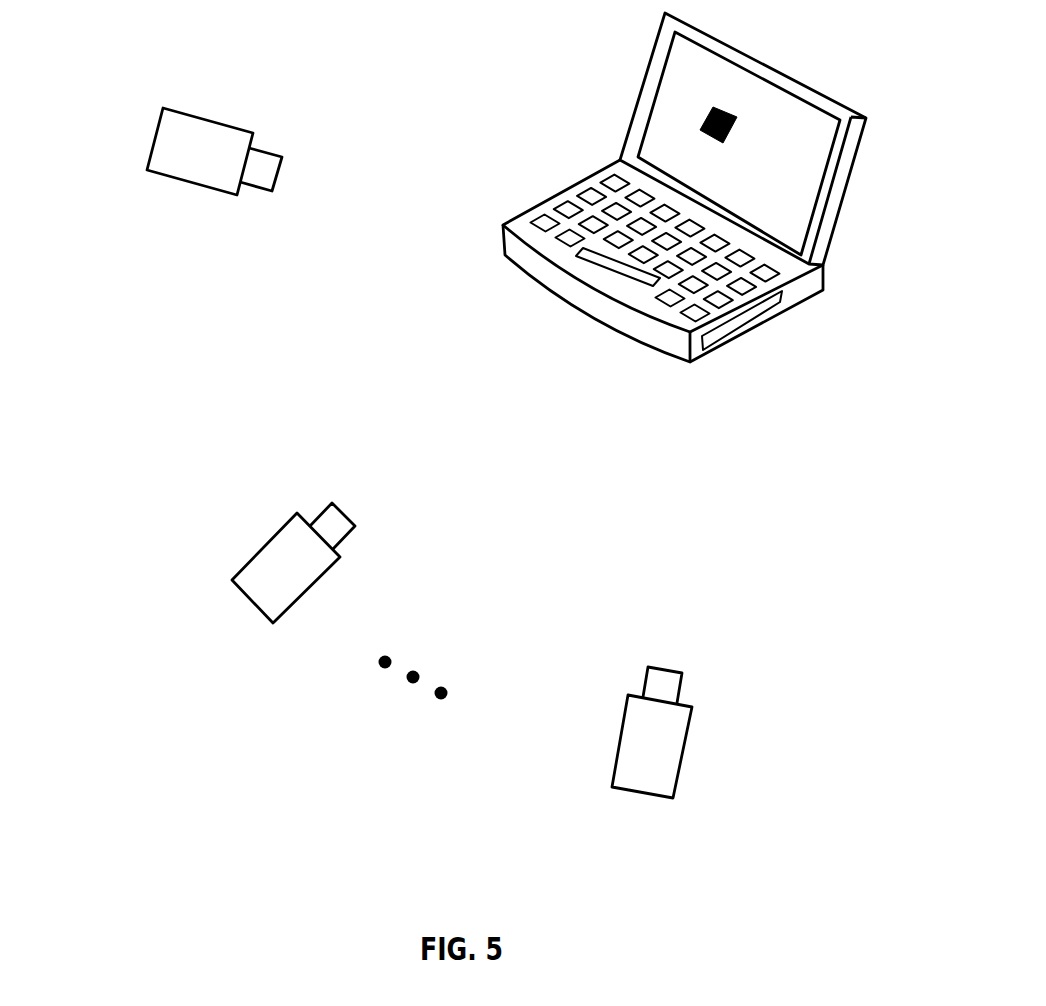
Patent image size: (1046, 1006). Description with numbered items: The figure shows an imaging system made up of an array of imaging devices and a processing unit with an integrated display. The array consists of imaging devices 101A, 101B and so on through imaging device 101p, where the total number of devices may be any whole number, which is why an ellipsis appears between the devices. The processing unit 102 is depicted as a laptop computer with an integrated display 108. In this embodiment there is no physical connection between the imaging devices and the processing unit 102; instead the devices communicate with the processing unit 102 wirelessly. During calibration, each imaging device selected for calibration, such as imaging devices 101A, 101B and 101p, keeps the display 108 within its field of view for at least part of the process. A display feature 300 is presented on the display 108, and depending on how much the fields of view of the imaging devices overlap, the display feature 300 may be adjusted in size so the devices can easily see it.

The imaging device 101A is at (140, 107).
The imaging device 101B is at (227, 572).
The imaging device 101p is at (598, 775).
The integrated display 108 is at (852, 182).
The processing unit 102 is at (810, 277).
The display feature 300 is at (727, 142).